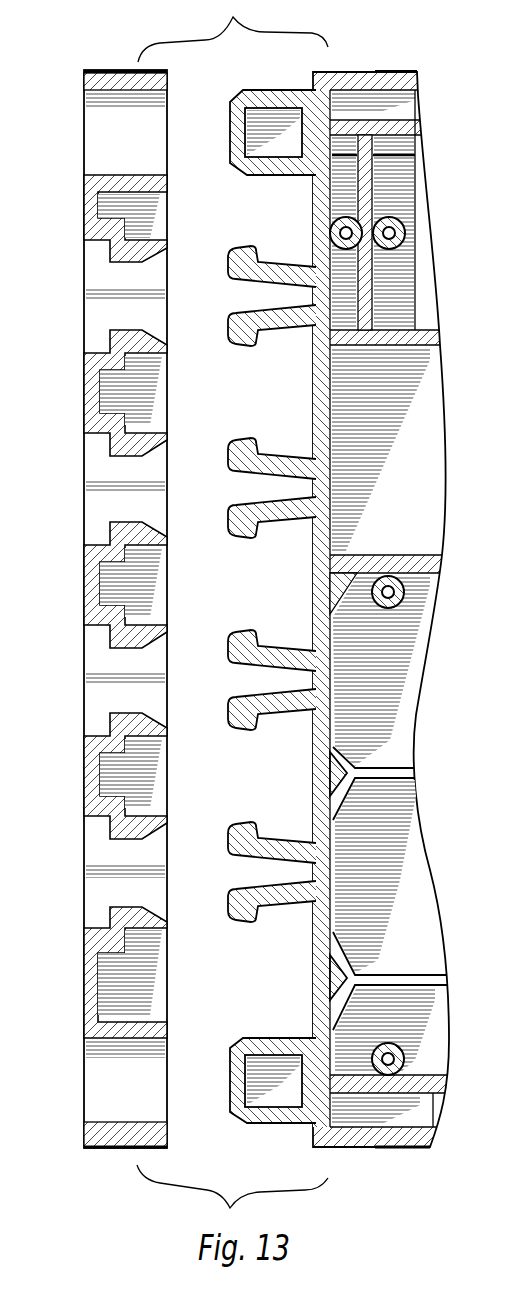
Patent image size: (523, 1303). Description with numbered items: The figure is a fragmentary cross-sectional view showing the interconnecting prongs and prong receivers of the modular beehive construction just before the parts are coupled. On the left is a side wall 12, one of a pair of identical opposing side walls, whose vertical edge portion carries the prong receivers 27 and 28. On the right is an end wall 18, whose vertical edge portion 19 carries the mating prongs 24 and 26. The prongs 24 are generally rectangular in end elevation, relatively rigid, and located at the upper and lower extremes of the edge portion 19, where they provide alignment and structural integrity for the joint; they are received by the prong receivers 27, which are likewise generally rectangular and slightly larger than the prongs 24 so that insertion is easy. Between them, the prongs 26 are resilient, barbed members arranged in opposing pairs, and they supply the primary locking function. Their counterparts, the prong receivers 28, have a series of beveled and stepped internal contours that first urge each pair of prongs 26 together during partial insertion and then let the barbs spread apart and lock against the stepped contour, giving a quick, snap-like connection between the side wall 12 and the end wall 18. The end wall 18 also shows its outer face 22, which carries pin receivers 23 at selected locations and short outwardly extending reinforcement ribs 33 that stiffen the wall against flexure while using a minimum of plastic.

The side wall 12 is at (107, 58).
The end wall 18 is at (357, 58).
The vertical edge portion 19 is at (313, 80).
The outer face 22 is at (422, 408).
The pin receiver 23 is at (398, 216).
The prong 24 is at (230, 138).
The prong 26 is at (262, 258).
The prong receiver 27 is at (84, 140).
The prong receiver 28 is at (84, 266).
The reinforcement rib 33 is at (348, 747).